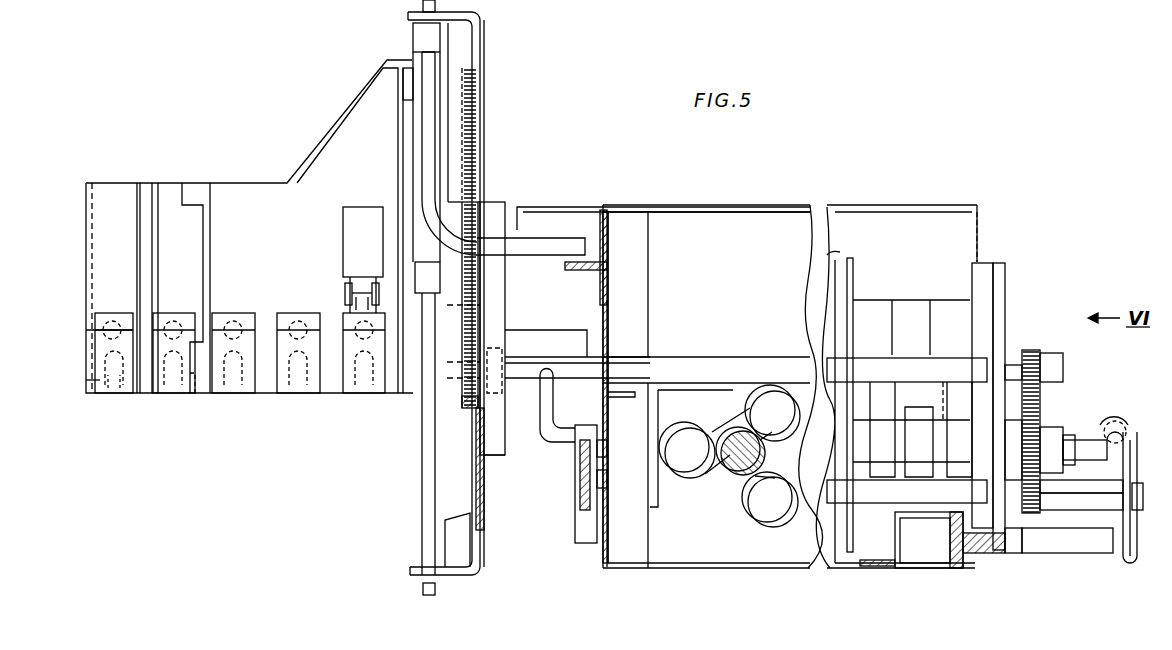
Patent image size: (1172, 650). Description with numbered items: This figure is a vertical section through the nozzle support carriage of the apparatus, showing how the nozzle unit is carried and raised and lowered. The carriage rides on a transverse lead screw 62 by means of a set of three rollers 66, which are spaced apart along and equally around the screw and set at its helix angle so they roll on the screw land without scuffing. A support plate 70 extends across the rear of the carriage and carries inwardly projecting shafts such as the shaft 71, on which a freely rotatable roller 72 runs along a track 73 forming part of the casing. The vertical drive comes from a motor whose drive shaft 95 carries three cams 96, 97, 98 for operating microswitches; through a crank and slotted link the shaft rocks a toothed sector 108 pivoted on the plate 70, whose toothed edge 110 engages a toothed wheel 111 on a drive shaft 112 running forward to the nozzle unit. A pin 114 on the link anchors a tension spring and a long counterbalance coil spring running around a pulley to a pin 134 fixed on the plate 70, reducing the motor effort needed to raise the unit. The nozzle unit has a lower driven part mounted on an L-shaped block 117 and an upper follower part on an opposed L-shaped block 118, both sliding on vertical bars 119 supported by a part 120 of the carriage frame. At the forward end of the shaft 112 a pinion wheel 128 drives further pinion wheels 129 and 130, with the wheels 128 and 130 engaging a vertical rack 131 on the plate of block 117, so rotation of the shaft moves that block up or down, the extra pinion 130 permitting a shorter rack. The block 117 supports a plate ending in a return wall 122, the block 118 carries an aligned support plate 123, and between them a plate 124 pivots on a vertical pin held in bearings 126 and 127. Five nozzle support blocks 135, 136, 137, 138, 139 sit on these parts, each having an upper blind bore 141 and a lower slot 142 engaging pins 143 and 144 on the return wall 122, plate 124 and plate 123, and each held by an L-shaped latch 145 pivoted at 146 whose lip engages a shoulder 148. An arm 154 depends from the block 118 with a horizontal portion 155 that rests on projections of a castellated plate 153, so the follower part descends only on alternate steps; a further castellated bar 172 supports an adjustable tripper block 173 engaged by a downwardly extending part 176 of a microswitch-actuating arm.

The lead screw 62 is at (735, 470).
The rollers 66 is at (770, 395).
The support plate 70 is at (995, 288).
The shaft 71 is at (1006, 555).
The roller 72 is at (945, 525).
The track 73 is at (980, 560).
The drive shaft 95 is at (878, 430).
The cam 96 is at (945, 445).
The cam 97 is at (918, 430).
The cam 98 is at (865, 398).
The toothed sector 108 is at (1035, 512).
The toothed edge 110 is at (1042, 401).
The toothed wheel 111 is at (1028, 350).
The drive shaft 112 is at (1048, 360).
The pin 114 is at (1112, 421).
The L-shaped block 117 is at (415, 272).
The L-shaped block 118 is at (425, 32).
The vertical bars 119 is at (430, 437).
The part of the carriage frame 120 is at (485, 575).
The return wall 122 is at (106, 197).
The support plate 123 is at (250, 195).
The plate 124 is at (162, 193).
The bearing 126 is at (197, 190).
The bearing 127 is at (192, 393).
The pinion wheel 128 is at (470, 410).
The pinion wheel 129 is at (478, 318).
The pinion wheel 130 is at (482, 200).
The vertical rack 131 is at (477, 85).
The pin 134 is at (1072, 490).
The nozzle support block 135 is at (102, 393).
The nozzle support block 136 is at (160, 393).
The nozzle support block 137 is at (248, 393).
The nozzle support block 138 is at (305, 393).
The nozzle support block 139 is at (357, 393).
The upper blind bore 141 is at (112, 320).
The lower slot 142 is at (142, 330).
The pin 143 is at (97, 338).
The pin 144 is at (95, 383).
The L-shaped latch 145 is at (358, 207).
The pivot 146 is at (345, 292).
The shoulder 148 is at (365, 320).
The castellated plate 153 is at (596, 270).
The arm 154 is at (427, 124).
The horizontal portion 155 is at (548, 245).
The castellated bar 172 is at (580, 478).
The tripper block 173 is at (589, 540).
The downwardly extending part 176 is at (548, 422).